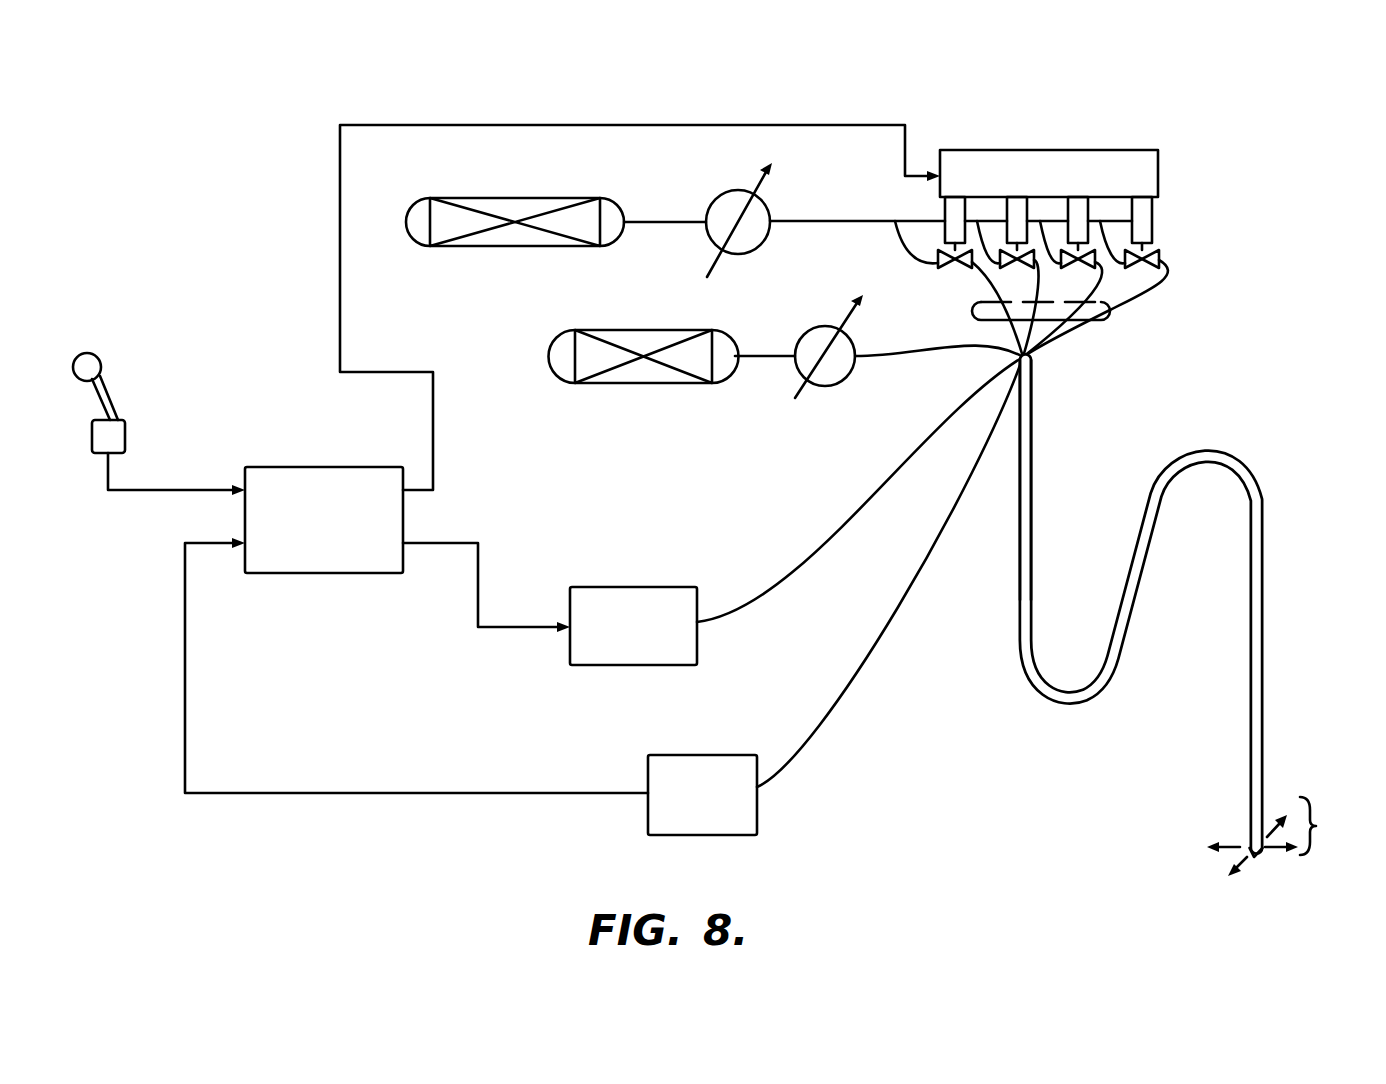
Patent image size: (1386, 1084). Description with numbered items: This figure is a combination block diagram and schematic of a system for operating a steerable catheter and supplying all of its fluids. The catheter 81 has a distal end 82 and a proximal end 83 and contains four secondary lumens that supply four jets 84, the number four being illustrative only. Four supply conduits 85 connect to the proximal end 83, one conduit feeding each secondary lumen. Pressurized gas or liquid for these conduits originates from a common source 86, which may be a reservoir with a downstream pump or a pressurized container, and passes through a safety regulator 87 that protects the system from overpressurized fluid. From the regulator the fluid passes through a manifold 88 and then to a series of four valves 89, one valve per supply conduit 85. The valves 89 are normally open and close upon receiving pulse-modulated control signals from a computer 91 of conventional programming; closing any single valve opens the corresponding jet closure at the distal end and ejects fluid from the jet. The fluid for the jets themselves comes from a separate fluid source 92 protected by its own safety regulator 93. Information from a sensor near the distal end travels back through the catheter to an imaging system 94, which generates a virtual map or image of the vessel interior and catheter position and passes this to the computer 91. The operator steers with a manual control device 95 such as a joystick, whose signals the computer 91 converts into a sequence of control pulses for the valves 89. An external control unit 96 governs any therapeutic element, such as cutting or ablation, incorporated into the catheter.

The catheter 81 is at (1232, 447).
The distal end 82 is at (1258, 862).
The proximal end 83 is at (1033, 382).
The jets 84 is at (1335, 821).
The supply conduits 85 is at (1110, 311).
The common source 86 is at (524, 198).
The safety regulator 87 is at (733, 193).
The manifold 88 is at (1085, 147).
The valves 89 is at (1157, 252).
The computer 91 is at (340, 467).
The separate fluid source 92 is at (652, 330).
The safety regulator 93 is at (820, 326).
The imaging system 94 is at (712, 755).
The manual control device 95 is at (127, 431).
The external control unit 96 is at (648, 587).